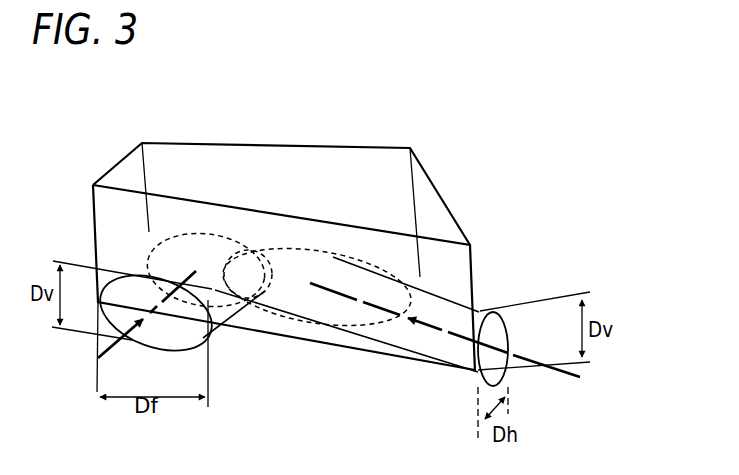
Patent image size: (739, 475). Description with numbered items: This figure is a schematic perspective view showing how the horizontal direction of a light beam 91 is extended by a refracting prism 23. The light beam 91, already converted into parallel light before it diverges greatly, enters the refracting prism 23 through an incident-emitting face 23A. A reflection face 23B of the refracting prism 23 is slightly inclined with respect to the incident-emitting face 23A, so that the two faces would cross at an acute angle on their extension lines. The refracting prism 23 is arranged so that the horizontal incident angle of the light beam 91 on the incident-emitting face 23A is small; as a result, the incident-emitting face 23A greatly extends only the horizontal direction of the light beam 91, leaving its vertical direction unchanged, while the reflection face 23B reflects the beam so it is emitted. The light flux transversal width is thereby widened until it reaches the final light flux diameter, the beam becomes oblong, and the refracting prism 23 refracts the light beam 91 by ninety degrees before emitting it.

The refracting prism 23 is at (335, 228).
The incident-emitting face 23A is at (460, 271).
The reflection face 23B is at (362, 152).
The light beam 91 is at (375, 335).